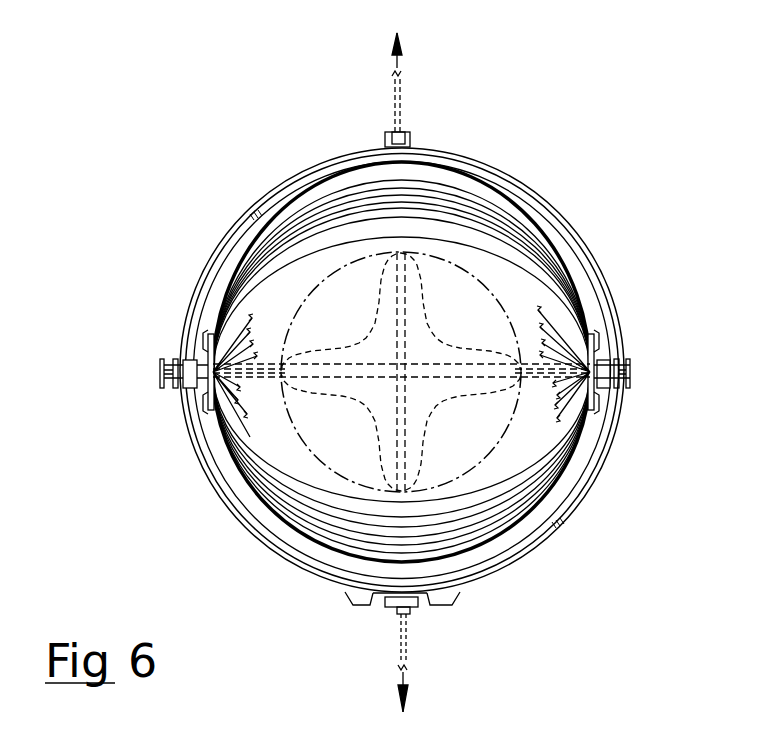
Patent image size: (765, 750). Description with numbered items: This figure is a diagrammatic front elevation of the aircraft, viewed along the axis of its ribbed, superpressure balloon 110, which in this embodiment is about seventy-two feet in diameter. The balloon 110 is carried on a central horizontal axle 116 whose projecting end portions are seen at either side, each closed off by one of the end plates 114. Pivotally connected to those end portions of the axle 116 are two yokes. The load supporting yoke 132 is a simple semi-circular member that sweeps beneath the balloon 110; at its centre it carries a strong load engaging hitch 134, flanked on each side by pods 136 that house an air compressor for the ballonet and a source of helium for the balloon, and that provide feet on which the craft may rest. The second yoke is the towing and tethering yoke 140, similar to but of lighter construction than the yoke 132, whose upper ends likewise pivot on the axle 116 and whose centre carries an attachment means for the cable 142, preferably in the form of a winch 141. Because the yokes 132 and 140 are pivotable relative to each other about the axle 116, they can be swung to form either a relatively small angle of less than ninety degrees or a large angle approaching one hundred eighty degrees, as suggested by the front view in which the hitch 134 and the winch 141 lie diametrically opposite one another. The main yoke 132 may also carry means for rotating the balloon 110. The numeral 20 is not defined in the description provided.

The cross-shaped gas bag / inflatable envelope 20 is at (497, 300).
The ribbed superpressure balloon 110 is at (587, 294).
The end plate 114 is at (595, 340).
The central horizontal axle 116 is at (233, 447).
The load supporting yoke 132 is at (600, 455).
The load engaging hitch 134 is at (413, 612).
The pod 136 is at (437, 605).
The towing and tethering yoke 140 is at (558, 220).
The winch 141 is at (406, 138).
The cable 142 is at (402, 91).